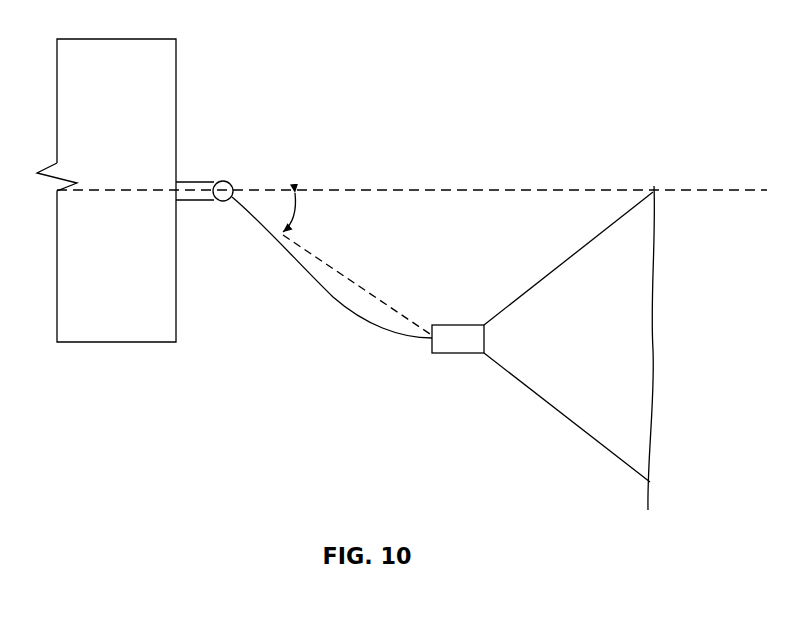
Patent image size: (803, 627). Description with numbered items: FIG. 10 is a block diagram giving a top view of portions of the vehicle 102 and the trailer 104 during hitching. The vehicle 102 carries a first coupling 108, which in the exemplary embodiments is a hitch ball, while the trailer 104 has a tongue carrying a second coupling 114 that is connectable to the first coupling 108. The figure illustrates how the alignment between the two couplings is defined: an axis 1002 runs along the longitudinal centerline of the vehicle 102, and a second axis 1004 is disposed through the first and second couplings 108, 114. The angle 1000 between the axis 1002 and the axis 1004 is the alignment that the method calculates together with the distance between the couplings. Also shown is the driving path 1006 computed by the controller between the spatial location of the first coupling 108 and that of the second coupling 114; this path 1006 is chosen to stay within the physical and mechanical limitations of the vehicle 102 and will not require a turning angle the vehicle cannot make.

The vehicle 102 is at (120, 38).
The first coupling 108 is at (217, 211).
The axis 1002 is at (513, 190).
The driving path 1006 is at (333, 297).
The axis 1004 is at (383, 305).
The angle 1000 is at (295, 212).
The second coupling 114 is at (462, 355).
The trailer 104 is at (563, 417).